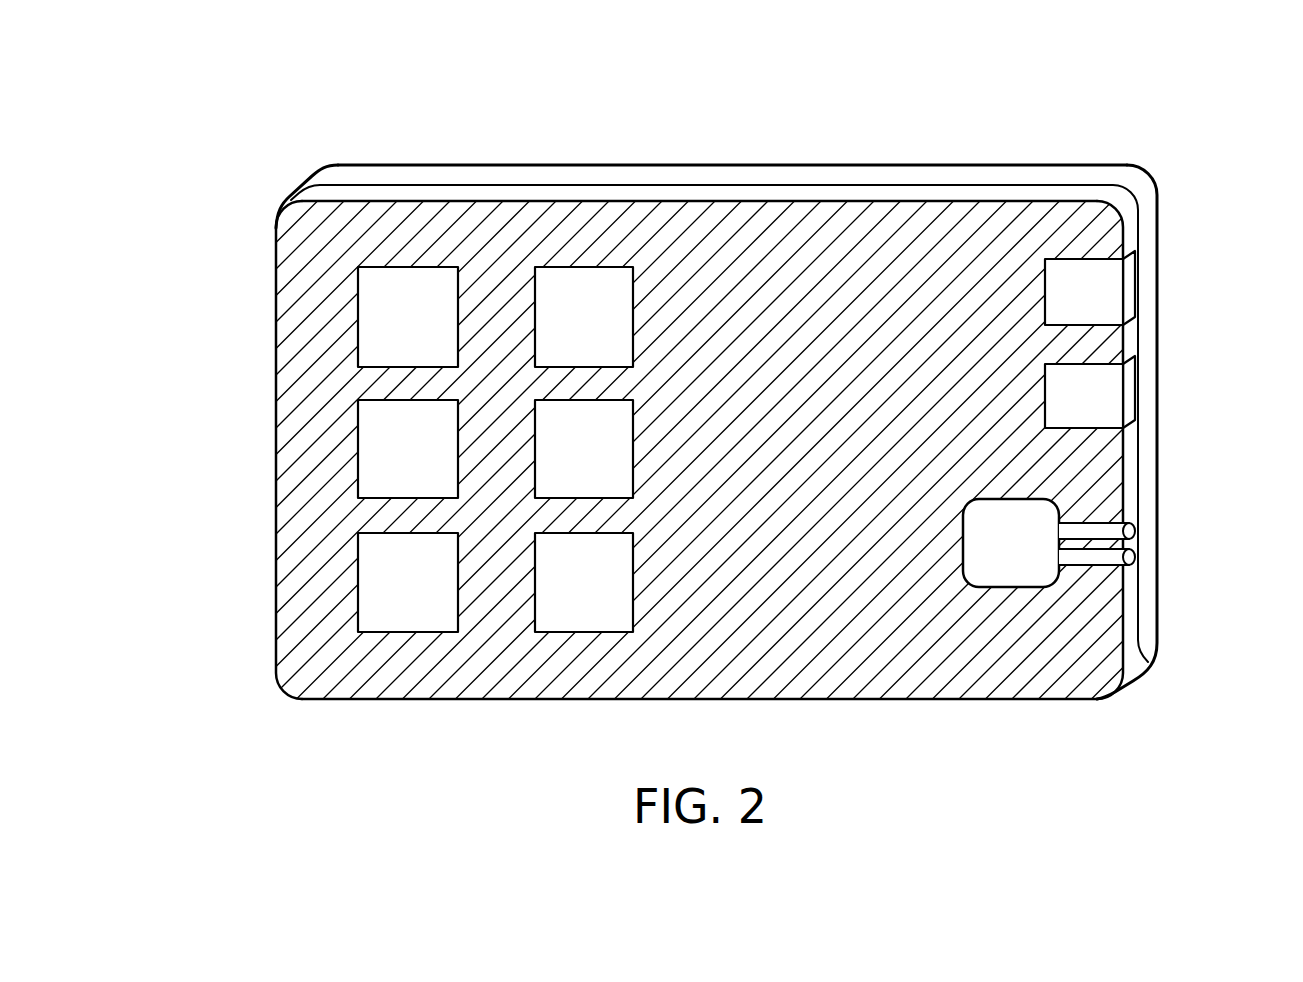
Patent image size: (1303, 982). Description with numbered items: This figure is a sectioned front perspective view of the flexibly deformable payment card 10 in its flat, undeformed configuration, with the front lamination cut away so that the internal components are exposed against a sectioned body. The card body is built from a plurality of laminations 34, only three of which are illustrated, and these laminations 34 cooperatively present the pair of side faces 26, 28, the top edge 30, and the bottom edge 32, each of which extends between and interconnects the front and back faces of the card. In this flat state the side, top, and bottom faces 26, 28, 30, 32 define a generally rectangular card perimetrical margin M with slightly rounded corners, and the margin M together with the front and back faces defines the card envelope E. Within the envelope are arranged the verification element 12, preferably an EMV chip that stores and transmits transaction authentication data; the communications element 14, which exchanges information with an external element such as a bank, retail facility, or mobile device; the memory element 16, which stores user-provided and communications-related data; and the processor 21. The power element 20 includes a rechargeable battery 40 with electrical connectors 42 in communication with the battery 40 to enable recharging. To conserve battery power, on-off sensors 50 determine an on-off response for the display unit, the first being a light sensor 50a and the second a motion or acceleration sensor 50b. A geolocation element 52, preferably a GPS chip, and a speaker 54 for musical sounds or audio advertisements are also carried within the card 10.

The payment card 10 is at (1170, 164).
The verification element 12 is at (387, 322).
The communications element 14 is at (387, 463).
The memory element 16 is at (402, 593).
The power element 20 is at (1011, 571).
The processor 21 is at (580, 598).
The side face 26 is at (276, 407).
The side face 28 is at (1128, 451).
The top edge 30 is at (855, 172).
The bottom edge 32 is at (878, 700).
The laminations 34 is at (960, 193).
The battery 40 is at (1035, 523).
The electrical connectors 42 is at (1107, 532).
The on-off sensors 50 is at (607, 443).
The light sensor 50a is at (1088, 385).
The motion or acceleration sensor 50b is at (585, 433).
The geolocation element 52 is at (573, 313).
The speaker 54 is at (1130, 285).
The card envelope E is at (261, 200).
The card perimetrical margin M is at (388, 167).